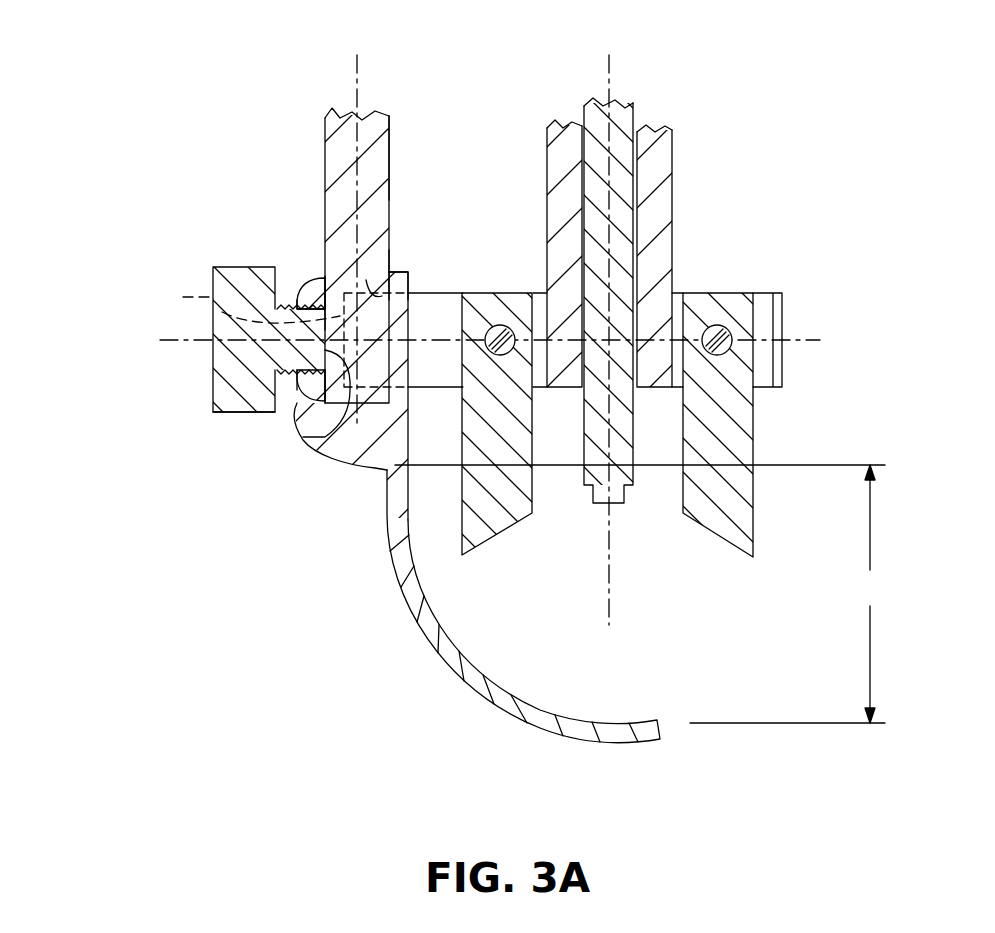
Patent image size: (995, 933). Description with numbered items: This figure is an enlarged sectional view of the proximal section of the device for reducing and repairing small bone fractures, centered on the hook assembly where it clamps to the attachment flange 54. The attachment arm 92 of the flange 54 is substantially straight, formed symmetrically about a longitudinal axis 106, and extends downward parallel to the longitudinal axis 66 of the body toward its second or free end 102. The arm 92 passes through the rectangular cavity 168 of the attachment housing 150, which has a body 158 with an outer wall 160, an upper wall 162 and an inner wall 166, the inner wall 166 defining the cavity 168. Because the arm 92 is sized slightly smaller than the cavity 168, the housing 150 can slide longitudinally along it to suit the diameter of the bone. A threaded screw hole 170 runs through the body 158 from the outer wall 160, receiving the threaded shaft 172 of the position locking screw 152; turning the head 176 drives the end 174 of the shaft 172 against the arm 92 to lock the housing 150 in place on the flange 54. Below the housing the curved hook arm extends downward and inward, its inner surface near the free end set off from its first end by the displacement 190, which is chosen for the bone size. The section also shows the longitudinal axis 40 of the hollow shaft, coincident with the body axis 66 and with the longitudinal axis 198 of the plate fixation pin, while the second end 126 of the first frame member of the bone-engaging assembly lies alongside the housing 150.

The longitudinal axis 40 is at (610, 598).
The attachment flange 54 is at (325, 124).
The longitudinal axis 66 is at (605, 571).
The attachment arm 92 is at (389, 125).
The free end 102 is at (381, 383).
The longitudinal axis 106 is at (357, 73).
The second end 126 is at (231, 301).
The attachment housing 150 is at (300, 292).
The position locking screw 152 is at (213, 384).
The body 158 is at (297, 392).
The outer wall 160 is at (410, 283).
The upper wall 162 is at (322, 292).
The inner wall 166 is at (366, 280).
The cavity 168 is at (396, 262).
The threaded screw hole 170 is at (323, 276).
The threaded shaft 172 is at (279, 383).
The end 174 is at (358, 376).
The head 176 is at (232, 412).
The displacement 190 is at (647, 594).
The longitudinal axis 198 is at (610, 543).